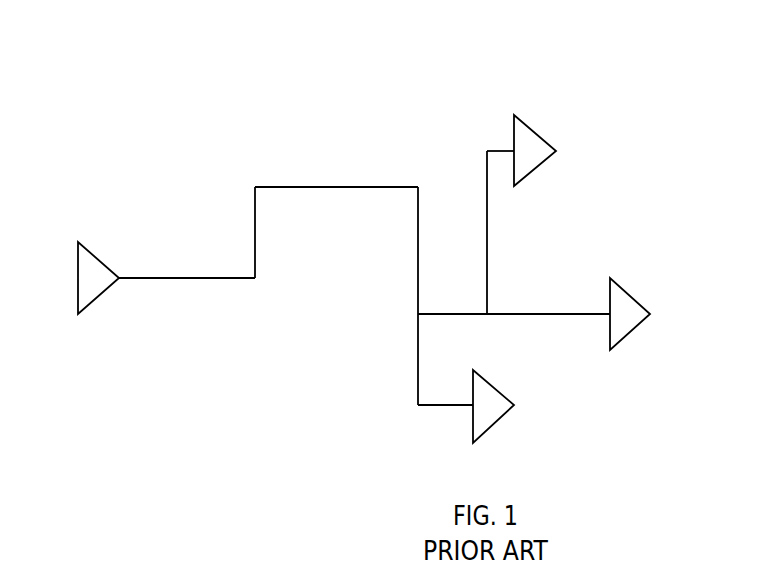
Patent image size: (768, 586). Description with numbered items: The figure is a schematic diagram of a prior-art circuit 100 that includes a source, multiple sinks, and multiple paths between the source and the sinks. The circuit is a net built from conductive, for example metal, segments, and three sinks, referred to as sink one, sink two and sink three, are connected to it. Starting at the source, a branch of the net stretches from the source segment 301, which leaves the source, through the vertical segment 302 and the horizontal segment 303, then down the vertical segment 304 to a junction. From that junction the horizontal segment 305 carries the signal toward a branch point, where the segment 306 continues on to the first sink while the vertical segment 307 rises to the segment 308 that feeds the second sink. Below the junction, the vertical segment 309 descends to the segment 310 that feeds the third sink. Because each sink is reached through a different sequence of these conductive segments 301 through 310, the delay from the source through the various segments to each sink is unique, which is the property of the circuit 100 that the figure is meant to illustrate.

The clock distribution network (prior art) 100 is at (302, 125).
The source segment 301 is at (187, 298).
The conductive segment 302 is at (231, 232).
The conductive segment 303 is at (336, 168).
The conductive segment 304 is at (393, 250).
The conductive segment 305 is at (452, 328).
The conductive segment 306 is at (548, 304).
The conductive segment 307 is at (512, 232).
The conductive segment 308 is at (485, 136).
The conductive segment 309 is at (394, 359).
The conductive segment 310 is at (445, 420).